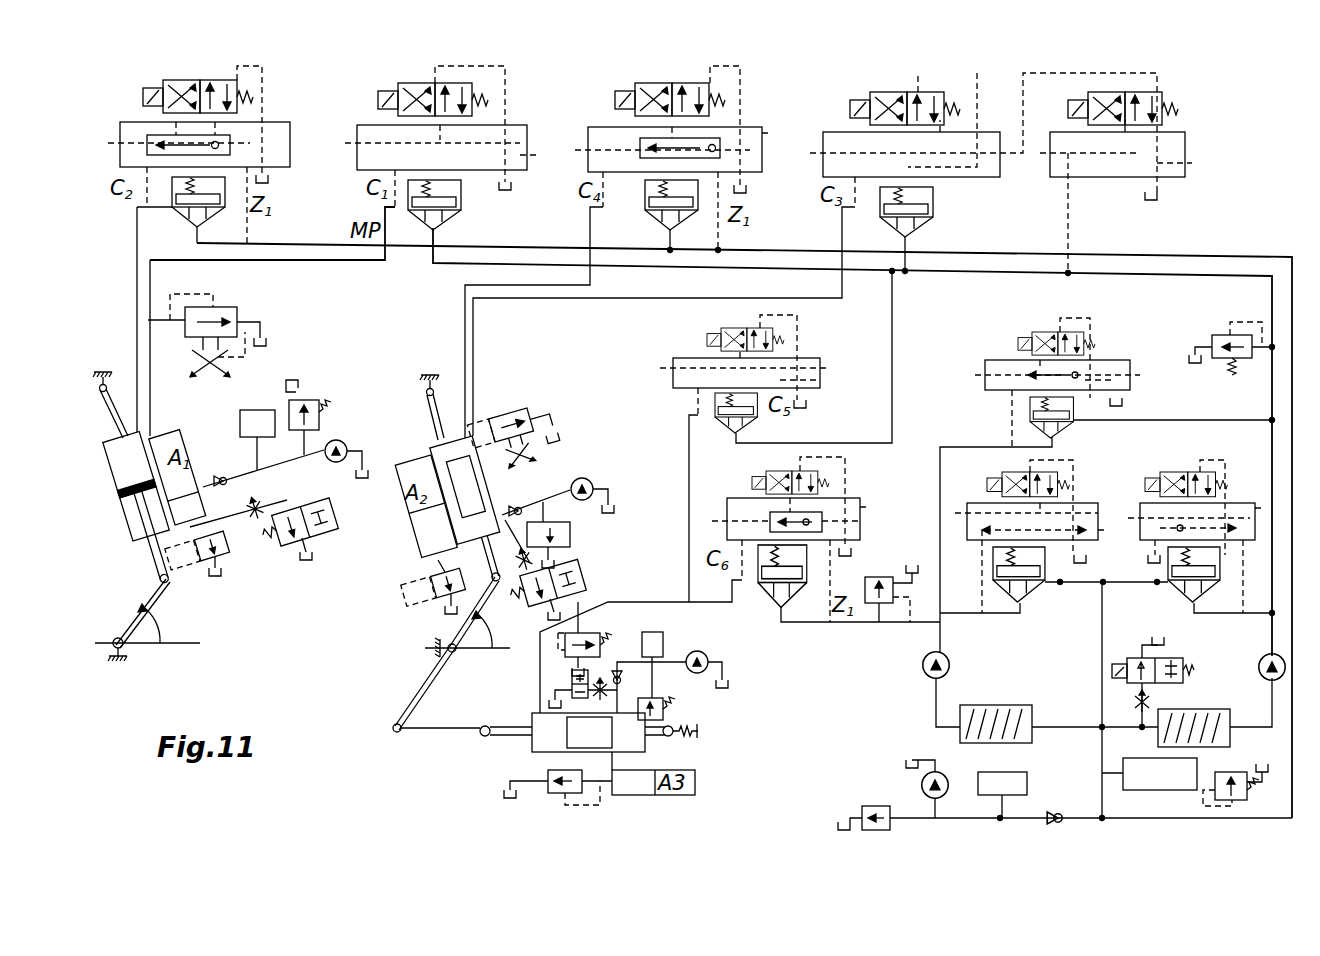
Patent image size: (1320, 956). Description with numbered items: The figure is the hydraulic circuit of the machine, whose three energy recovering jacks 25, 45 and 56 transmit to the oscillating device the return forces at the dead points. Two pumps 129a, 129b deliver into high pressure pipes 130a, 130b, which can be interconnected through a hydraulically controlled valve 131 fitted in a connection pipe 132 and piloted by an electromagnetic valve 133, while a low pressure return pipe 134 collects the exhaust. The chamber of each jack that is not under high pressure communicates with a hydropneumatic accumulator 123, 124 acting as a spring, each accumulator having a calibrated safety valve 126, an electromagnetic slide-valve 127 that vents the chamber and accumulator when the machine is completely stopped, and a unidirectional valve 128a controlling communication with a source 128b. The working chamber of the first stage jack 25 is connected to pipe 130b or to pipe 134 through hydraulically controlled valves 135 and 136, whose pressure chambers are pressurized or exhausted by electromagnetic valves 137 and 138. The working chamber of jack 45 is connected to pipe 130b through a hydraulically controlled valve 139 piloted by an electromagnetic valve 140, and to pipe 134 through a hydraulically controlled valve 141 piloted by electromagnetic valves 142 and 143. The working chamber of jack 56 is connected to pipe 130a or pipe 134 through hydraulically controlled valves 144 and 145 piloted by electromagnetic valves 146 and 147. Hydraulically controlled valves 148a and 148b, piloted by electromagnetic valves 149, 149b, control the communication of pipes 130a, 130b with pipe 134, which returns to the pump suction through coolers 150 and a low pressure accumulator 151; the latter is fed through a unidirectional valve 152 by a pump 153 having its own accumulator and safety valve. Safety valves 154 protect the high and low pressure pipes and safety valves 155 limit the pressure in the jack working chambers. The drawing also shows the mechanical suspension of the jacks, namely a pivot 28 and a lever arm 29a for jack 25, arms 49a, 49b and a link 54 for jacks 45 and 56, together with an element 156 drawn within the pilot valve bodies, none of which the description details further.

The jack 25 is at (134, 537).
The pivot 28 is at (125, 650).
The lever arm 29a is at (140, 606).
The jack 45 is at (486, 484).
The lever arm 49a is at (449, 644).
The lever arm 49b is at (402, 688).
The link 54 is at (462, 721).
The jack 56 is at (530, 746).
The hydropneumatic accumulator 123 is at (190, 470).
The hydropneumatic accumulator 124 is at (414, 532).
The calibrated safety valve 126 is at (227, 556).
The electromagnetic slide-valve 127 is at (324, 538).
The unidirectional valve 128a is at (230, 482).
The source 128b is at (347, 448).
The pump 129a is at (950, 670).
The pump 129b is at (1260, 660).
The high pressure pipe 130a is at (912, 630).
The high pressure pipe 130b is at (318, 236).
The hydraulically controlled valve 131 is at (1072, 406).
The connection pipe 132 is at (1203, 424).
The electromagnetic valve 133 is at (1024, 332).
The low pressure return pipe 134 is at (1036, 280).
The hydraulically controlled valve 135 is at (201, 224).
The hydraulically controlled valve 136 is at (453, 218).
The electromagnetic valve 137 is at (237, 84).
The electromagnetic valve 138 is at (476, 90).
The hydraulically controlled valve 139 is at (673, 224).
The electromagnetic valve 140 is at (654, 90).
The hydraulically controlled valve 141 is at (925, 218).
The electromagnetic valve 142 is at (1174, 106).
The electromagnetic valve 143 is at (894, 92).
The hydraulically controlled valve 144 is at (804, 586).
The hydraulically controlled valve 145 is at (758, 425).
The electromagnetic valve 146 is at (750, 471).
The electromagnetic valve 147 is at (724, 330).
The hydraulically controlled valve 148a is at (1040, 590).
The hydraulically controlled valve 148b is at (1172, 590).
The electromagnetic valve 149 is at (981, 475).
The electromagnetic valve 149b is at (1222, 492).
The cooler 150 is at (1030, 697).
The low pressure accumulator 151 is at (1182, 792).
The unidirectional valve 152 is at (1060, 812).
The pump 153 is at (956, 772).
The safety valve 154 is at (865, 594).
The safety valve 155 is at (226, 310).
The check valve 156 is at (223, 133).